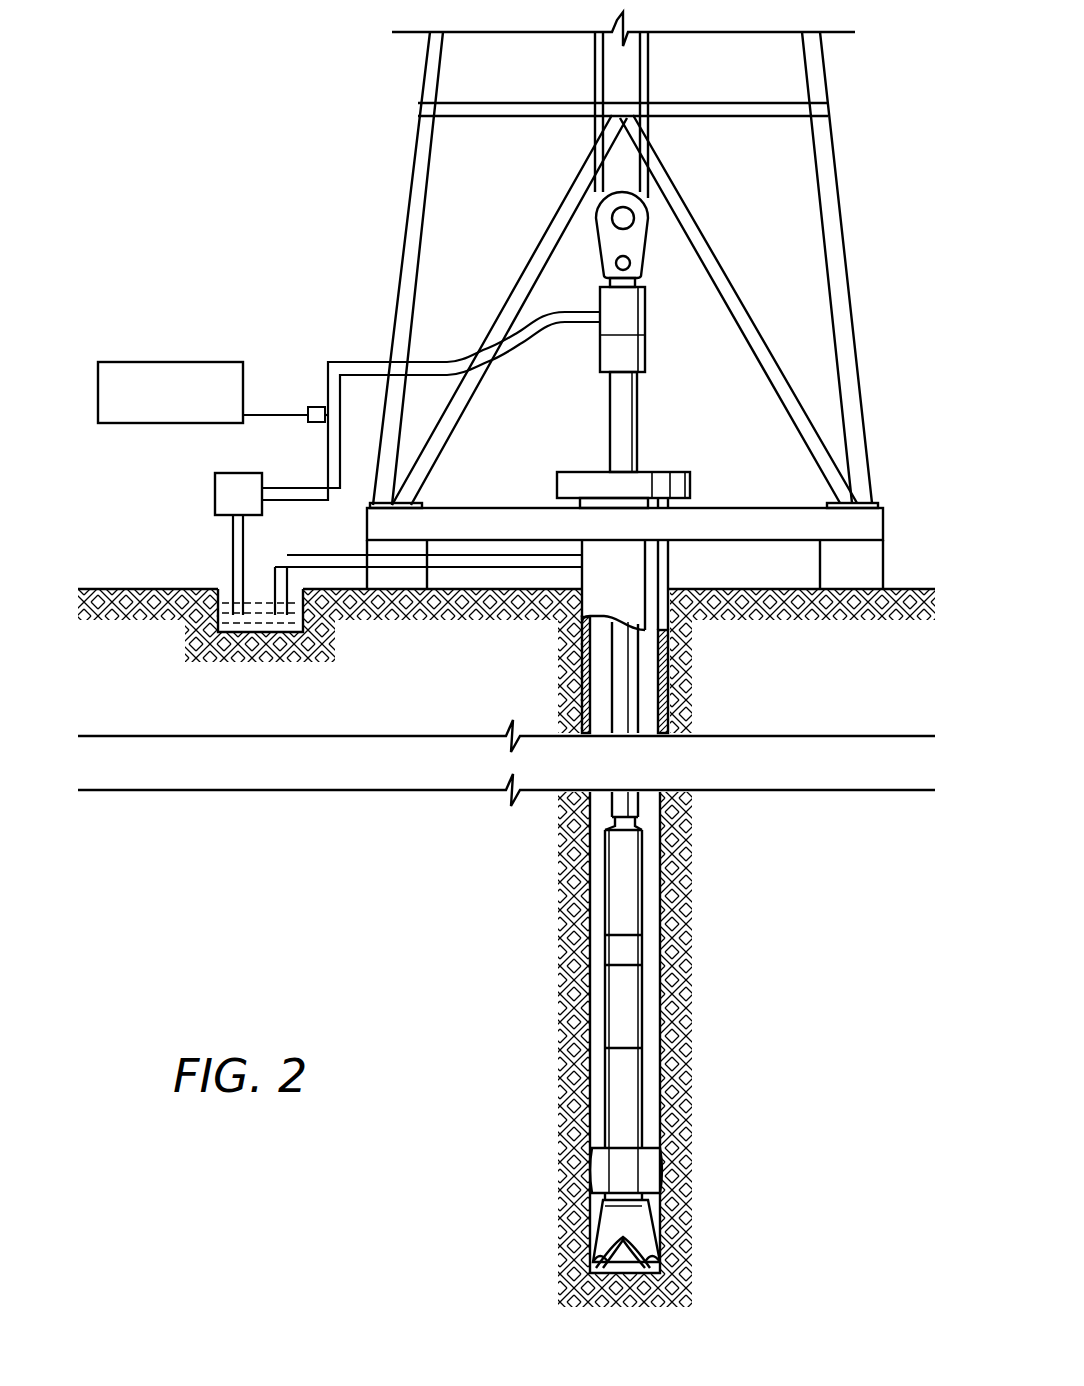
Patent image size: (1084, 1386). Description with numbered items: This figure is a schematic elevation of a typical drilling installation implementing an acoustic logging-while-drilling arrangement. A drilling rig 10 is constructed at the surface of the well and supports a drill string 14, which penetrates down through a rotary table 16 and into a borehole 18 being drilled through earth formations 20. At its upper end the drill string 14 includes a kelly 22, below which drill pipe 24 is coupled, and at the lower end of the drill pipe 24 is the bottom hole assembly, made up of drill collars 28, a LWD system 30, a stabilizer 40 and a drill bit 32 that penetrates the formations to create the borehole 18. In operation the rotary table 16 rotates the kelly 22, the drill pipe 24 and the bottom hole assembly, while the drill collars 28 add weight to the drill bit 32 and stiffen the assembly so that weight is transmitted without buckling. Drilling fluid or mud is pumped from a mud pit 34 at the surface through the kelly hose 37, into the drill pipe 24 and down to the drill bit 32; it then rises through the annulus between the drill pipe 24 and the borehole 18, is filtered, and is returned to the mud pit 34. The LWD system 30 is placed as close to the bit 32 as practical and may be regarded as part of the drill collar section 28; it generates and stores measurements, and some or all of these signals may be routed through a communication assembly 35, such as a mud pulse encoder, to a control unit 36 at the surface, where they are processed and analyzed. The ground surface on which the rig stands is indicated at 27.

The drilling rig 10 is at (842, 197).
The drill string 14 is at (625, 670).
The rotary table 16 is at (692, 480).
The borehole 18 is at (648, 710).
The earth formations 20 is at (412, 906).
The kelly 22 is at (637, 423).
The drill pipe 24 is at (625, 803).
The earth surface 27 is at (913, 587).
The drill collars 28 is at (638, 865).
The LWD system 30 is at (642, 1008).
The drill bit 32 is at (640, 1228).
The mud pit 34 is at (262, 627).
The communication assembly 35 is at (627, 950).
The control unit 36 is at (167, 362).
The kelly hose 37 is at (530, 340).
The stabilizer 40 is at (650, 1173).